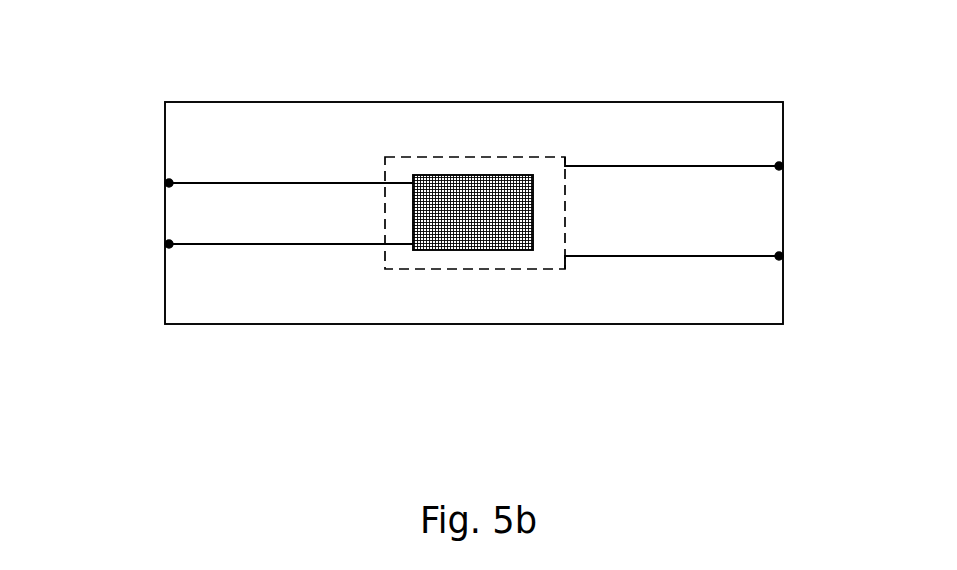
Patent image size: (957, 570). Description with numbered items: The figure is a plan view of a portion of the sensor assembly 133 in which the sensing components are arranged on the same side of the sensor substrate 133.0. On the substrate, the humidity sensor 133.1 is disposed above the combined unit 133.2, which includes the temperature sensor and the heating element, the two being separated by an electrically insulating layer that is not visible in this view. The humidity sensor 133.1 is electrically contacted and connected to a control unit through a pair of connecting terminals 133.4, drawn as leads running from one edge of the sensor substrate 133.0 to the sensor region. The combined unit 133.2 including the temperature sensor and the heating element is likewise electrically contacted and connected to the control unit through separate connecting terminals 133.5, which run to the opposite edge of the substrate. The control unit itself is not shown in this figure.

The sensor assembly 133 is at (138, 208).
The sensor substrate 133.0 is at (722, 112).
The humidity sensor 133.1 is at (455, 227).
The combined unit including the temperature sensor and the heating element 133.2 is at (506, 269).
The connecting terminals 133.4 is at (166, 183).
The connecting terminals 133.5 is at (783, 166).